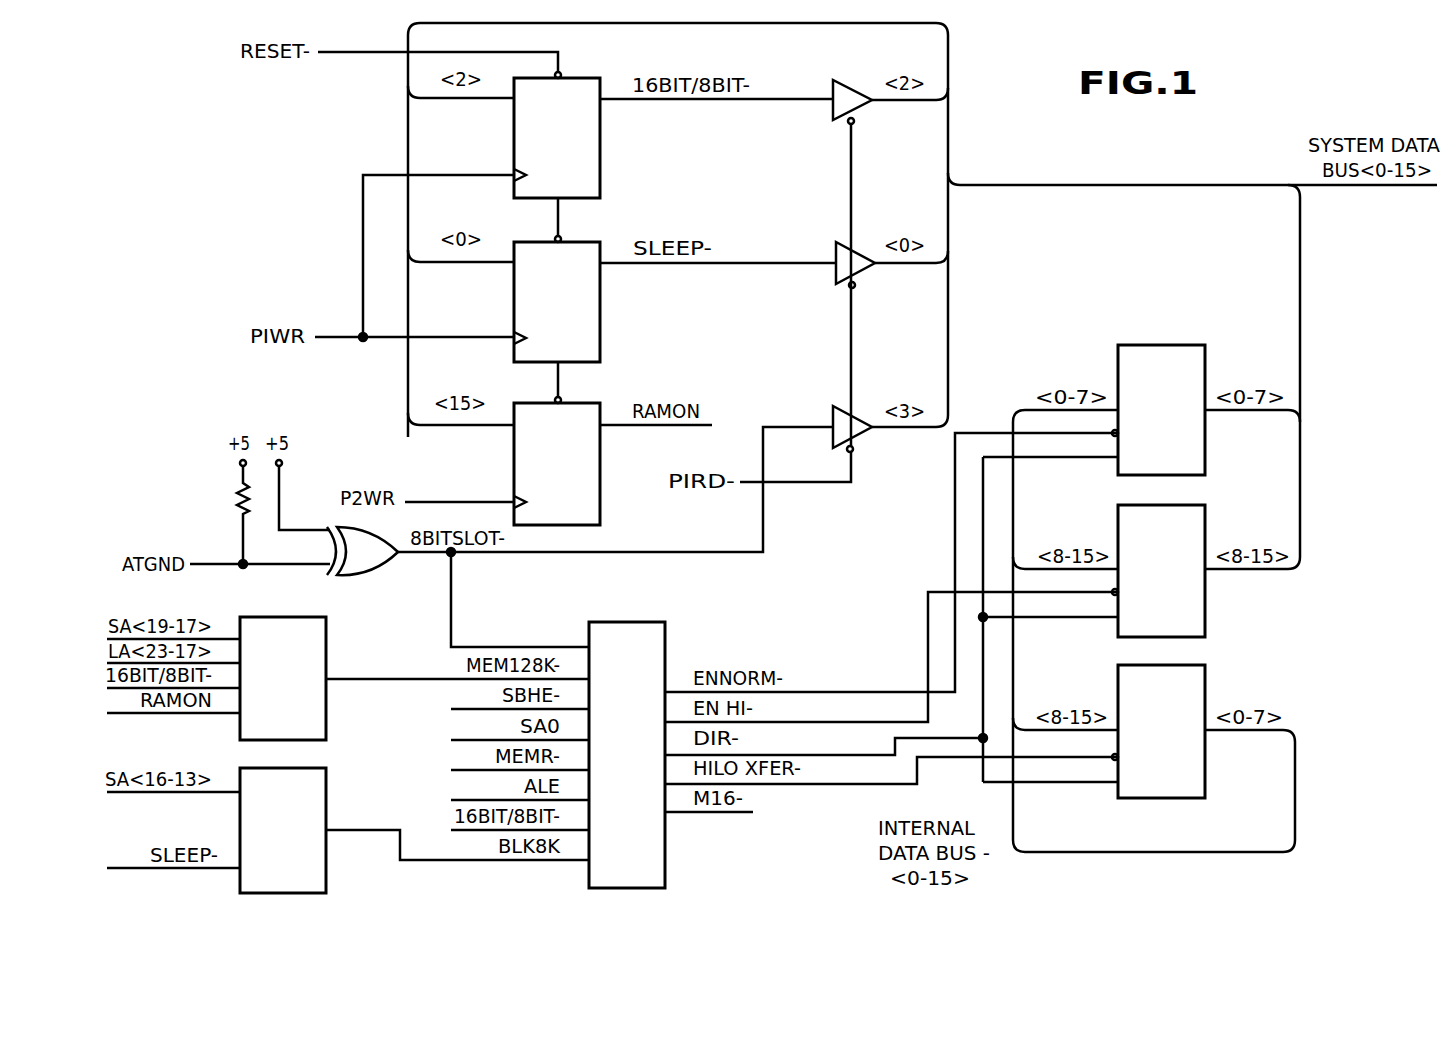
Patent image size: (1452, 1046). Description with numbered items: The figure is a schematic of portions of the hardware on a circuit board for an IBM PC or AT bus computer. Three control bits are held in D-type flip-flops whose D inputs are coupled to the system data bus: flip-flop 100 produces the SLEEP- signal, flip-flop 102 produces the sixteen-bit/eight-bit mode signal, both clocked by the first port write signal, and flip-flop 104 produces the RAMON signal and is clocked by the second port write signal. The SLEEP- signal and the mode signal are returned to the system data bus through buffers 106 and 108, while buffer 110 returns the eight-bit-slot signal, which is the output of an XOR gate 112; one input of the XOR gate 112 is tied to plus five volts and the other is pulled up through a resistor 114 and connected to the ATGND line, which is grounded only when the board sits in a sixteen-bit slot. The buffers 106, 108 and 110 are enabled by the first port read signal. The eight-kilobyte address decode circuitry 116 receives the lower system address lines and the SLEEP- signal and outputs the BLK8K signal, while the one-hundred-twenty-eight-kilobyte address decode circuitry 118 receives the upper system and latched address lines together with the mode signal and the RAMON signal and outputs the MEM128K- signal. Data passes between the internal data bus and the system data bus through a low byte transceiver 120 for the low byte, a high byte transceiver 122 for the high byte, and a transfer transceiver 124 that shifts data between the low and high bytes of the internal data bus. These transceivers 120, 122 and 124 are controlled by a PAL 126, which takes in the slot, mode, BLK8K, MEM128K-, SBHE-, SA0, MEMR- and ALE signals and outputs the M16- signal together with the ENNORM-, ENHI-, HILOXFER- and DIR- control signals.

The D-type flip-flop 100 is at (602, 318).
The D-type flip-flop 102 is at (602, 158).
The D-type flip-flop 104 is at (602, 500).
The buffer 106 is at (858, 244).
The buffer 108 is at (858, 85).
The buffer 110 is at (856, 408).
The XOR gate 112 is at (368, 580).
The resistor 114 is at (234, 496).
The 8k address decode circuitry 116 is at (327, 877).
The 128k address decode circuitry 118 is at (327, 714).
The low byte transceiver 120 is at (1206, 452).
The high byte transceiver 122 is at (1206, 612).
The transfer transceiver 124 is at (1206, 777).
The programmable array logic (PAL) device 126 is at (590, 622).